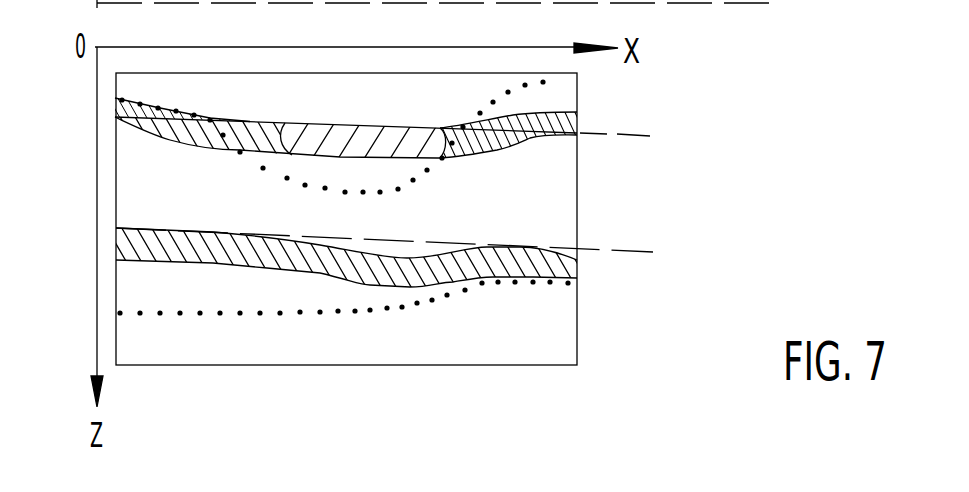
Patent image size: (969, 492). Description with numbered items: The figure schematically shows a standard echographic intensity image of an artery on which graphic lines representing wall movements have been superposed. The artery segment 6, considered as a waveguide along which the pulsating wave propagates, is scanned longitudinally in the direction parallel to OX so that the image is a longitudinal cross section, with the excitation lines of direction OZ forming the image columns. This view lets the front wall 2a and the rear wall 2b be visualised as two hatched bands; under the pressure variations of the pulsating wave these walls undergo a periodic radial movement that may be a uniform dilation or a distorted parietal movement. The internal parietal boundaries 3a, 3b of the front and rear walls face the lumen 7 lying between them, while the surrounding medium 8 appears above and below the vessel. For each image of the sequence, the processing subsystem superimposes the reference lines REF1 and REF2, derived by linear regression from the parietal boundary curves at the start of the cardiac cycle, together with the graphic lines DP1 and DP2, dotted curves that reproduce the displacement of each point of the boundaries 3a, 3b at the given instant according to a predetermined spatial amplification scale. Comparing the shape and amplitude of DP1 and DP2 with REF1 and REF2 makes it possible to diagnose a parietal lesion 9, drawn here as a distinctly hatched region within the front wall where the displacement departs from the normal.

The front wall 2a is at (152, 121).
The internal parietal boundary 3a is at (158, 143).
The internal parietal boundary 3b is at (165, 224).
The rear wall 2b is at (117, 243).
The artery segment 6 is at (582, 217).
The intermediate region between layers 7 is at (527, 193).
The background region 8 is at (315, 87).
The parietal lesion 9 is at (367, 143).
The graphic line DP1 is at (520, 95).
The graphic line DP2 is at (545, 295).
The reference line REF1 is at (622, 137).
The reference line REF2 is at (617, 252).